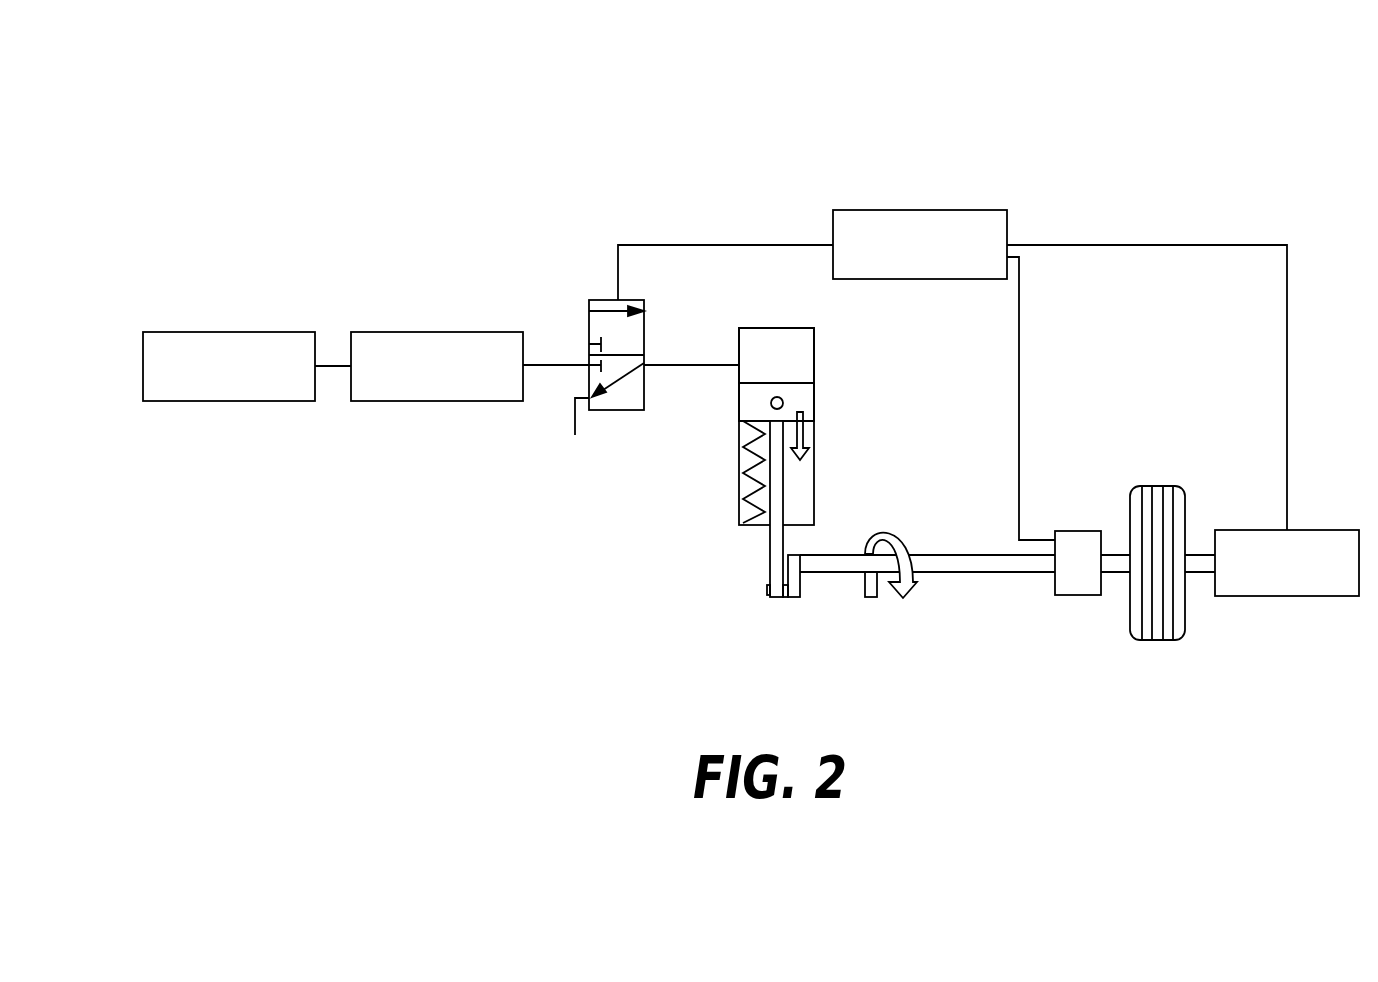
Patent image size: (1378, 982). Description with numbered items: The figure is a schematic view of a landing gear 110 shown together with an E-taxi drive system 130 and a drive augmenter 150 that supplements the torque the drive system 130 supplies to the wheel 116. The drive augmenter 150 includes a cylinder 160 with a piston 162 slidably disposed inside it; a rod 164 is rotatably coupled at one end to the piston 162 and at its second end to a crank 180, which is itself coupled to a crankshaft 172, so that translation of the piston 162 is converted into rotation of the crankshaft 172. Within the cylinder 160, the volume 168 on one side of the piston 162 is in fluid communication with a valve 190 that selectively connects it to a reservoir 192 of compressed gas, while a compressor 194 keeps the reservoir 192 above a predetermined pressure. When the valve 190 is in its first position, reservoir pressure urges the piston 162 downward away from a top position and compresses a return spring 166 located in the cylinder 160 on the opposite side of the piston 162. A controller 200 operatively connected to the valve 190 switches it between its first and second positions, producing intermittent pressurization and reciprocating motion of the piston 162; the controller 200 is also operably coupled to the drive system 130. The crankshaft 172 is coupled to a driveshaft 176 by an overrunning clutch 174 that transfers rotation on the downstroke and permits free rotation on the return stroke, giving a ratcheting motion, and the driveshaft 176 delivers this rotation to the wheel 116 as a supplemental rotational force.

The landing gear 110 is at (1277, 195).
The wheel 116 is at (1183, 633).
The drive system 130 is at (1291, 610).
The drive augmenter 150 is at (941, 400).
The cylinder 160 is at (764, 435).
The piston 162 is at (790, 396).
The rod 164 is at (783, 487).
The return spring 166 is at (750, 497).
The volume 168 is at (766, 355).
The crankshaft 172 is at (960, 573).
The clutch 174 is at (1080, 595).
The driveshaft 176 is at (1118, 570).
The crank 180 is at (756, 604).
The valve 190 is at (589, 322).
The reservoir 192 is at (443, 330).
The compressor 194 is at (232, 330).
The controller 200 is at (917, 209).